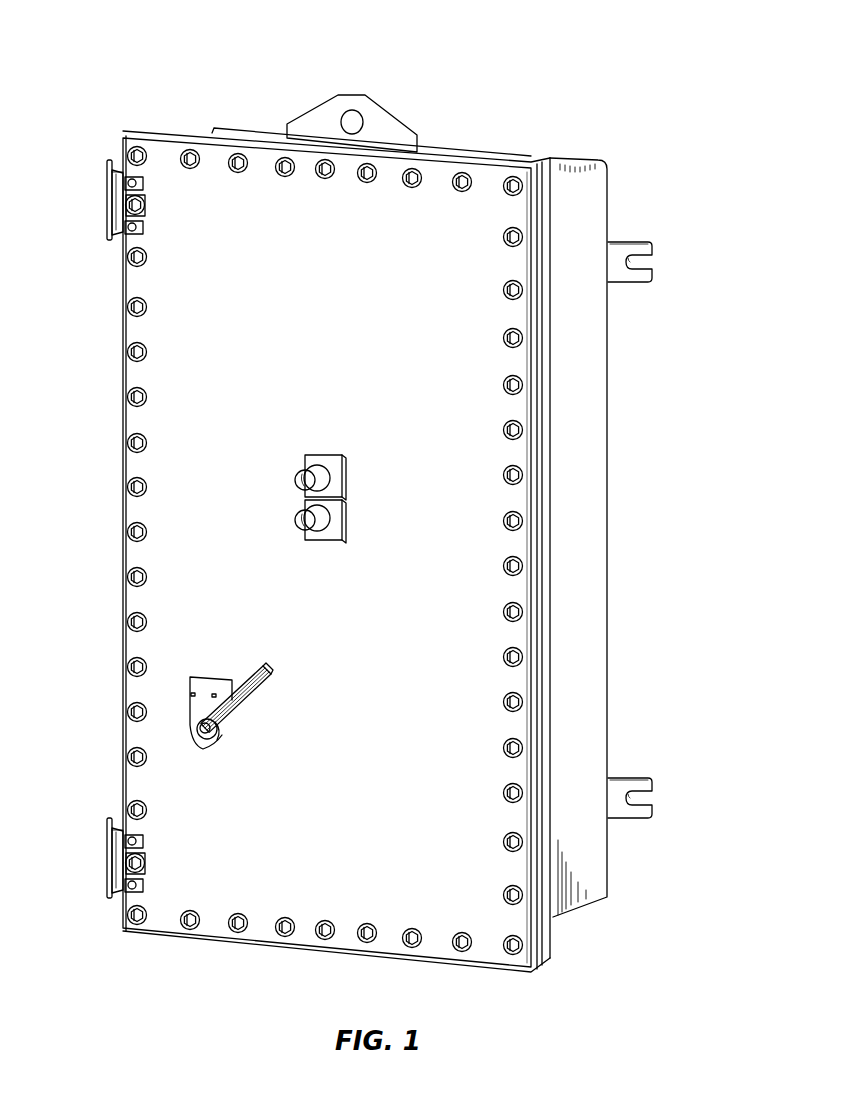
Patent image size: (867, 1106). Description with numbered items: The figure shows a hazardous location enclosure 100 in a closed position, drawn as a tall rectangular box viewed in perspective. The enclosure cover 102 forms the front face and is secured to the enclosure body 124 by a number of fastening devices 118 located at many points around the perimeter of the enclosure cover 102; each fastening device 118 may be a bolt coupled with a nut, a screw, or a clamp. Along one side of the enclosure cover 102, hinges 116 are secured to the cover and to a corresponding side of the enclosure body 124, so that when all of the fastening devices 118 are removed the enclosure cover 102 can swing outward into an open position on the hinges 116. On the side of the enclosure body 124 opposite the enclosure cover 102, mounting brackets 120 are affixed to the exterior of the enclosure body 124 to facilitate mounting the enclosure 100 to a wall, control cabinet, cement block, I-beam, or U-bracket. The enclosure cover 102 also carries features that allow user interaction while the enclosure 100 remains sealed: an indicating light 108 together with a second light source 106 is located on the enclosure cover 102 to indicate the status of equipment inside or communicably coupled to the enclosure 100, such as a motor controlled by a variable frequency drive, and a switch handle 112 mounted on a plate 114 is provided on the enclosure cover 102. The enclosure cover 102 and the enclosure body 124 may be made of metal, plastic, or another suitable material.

The hazardous location enclosure 100 is at (651, 49).
The enclosure cover 102 is at (298, 551).
The push button 106 is at (300, 478).
The indicating light 108 is at (300, 519).
The switch handle 112 is at (248, 695).
The handle mounting plate 114 is at (205, 685).
The hinge 116 is at (107, 196).
The fastening device 118 is at (131, 488).
The mounting bracket 120 is at (625, 283).
The enclosure body 124 is at (608, 530).